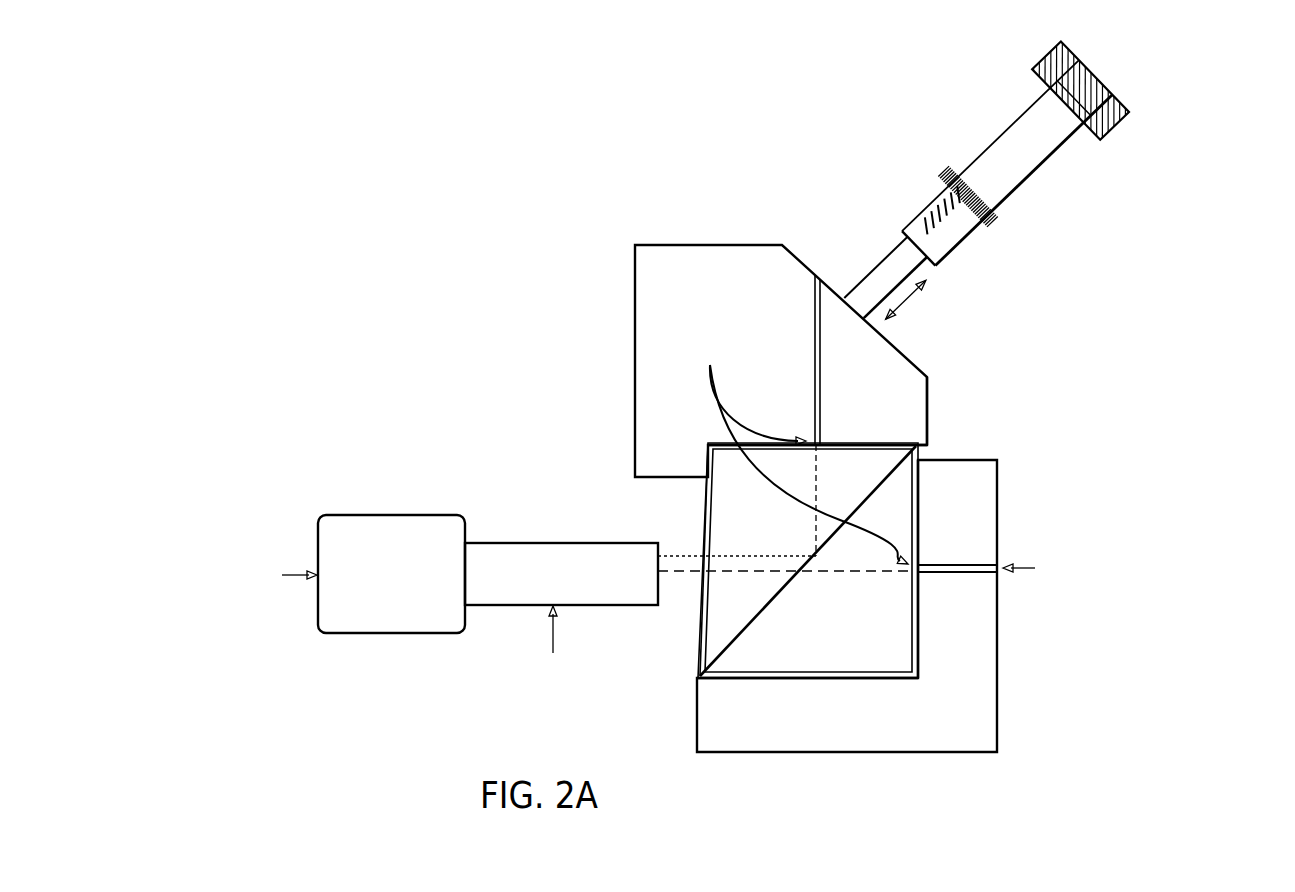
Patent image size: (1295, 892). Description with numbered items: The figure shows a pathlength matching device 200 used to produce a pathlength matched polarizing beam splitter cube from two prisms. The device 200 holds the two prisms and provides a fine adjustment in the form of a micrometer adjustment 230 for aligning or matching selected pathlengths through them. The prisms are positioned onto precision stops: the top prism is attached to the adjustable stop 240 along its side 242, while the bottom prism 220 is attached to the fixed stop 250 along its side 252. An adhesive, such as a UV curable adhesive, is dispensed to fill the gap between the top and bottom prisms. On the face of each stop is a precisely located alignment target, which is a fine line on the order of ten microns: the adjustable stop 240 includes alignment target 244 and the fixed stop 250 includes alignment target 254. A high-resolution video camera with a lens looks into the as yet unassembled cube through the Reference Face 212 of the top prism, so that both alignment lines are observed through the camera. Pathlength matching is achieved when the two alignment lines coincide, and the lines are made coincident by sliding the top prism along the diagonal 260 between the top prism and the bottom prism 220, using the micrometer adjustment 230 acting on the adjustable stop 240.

The pathlength matching device 200 is at (1122, 327).
The Reference Face 212 is at (708, 512).
The prism 220 is at (894, 635).
The micrometer adjustment 230 is at (1125, 150).
The adjustable stop 240 is at (625, 278).
The side 242 is at (872, 443).
The alignment target 244 is at (885, 388).
The fixed stop 250 is at (1011, 712).
The side 252 is at (818, 678).
The alignment target 254 is at (918, 613).
The diagonal 260 is at (934, 451).